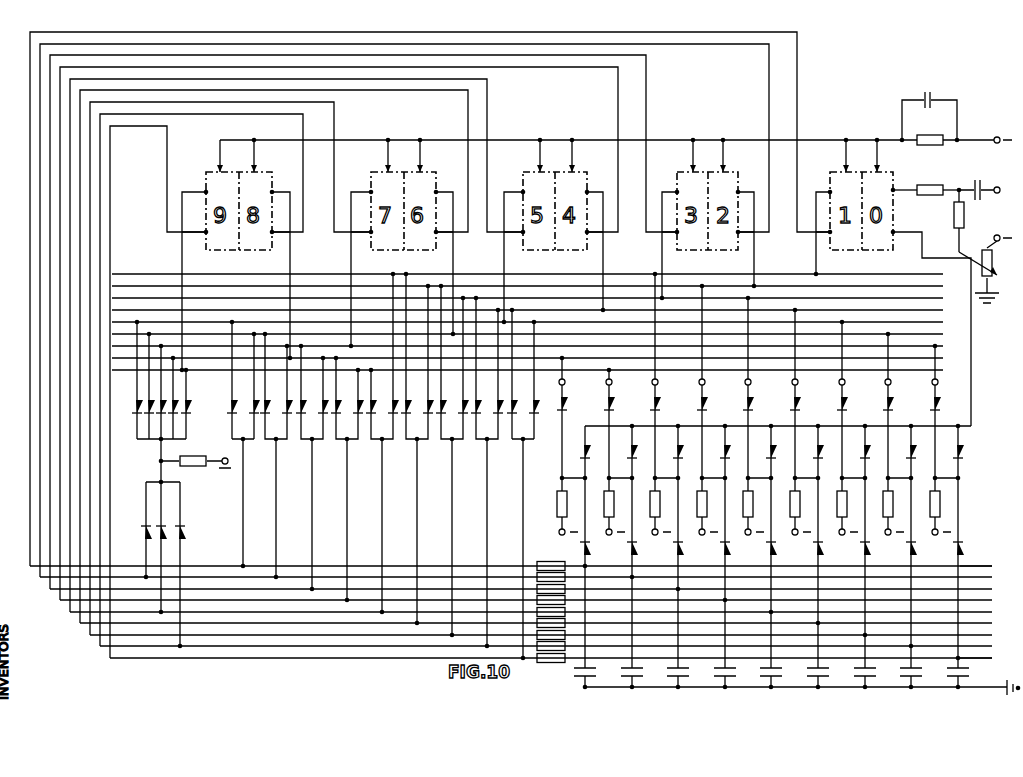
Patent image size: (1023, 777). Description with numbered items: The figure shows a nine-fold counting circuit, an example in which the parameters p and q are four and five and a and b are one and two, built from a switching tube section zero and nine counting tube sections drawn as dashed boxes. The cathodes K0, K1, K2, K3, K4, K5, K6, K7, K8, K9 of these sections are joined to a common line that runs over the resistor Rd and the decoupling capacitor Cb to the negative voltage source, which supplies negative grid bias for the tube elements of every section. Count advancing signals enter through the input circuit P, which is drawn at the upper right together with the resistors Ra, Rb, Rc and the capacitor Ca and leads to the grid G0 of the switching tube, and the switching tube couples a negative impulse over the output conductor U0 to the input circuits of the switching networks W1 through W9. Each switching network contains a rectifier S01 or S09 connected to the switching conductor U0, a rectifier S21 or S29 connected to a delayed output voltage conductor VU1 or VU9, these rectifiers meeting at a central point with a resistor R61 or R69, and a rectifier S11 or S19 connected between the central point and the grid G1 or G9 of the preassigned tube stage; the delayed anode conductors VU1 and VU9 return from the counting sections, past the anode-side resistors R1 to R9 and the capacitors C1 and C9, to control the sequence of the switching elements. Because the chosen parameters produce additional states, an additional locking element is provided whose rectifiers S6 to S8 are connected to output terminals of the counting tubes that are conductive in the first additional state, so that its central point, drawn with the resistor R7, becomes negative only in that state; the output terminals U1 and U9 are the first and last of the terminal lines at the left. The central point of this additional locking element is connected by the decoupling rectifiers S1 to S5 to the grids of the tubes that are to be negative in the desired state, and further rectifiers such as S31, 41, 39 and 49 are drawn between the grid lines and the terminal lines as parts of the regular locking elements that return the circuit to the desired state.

The cathode of switching tube section K0 is at (883, 155).
The cathode of counting tube K1 is at (852, 155).
The cathode of counting tube K2 is at (729, 155).
The cathode of counting tube K3 is at (699, 155).
The cathode of counting tube K4 is at (578, 155).
The cathode of counting tube K5 is at (546, 155).
The cathode of counting tube K6 is at (426, 155).
The cathode of counting tube K7 is at (394, 155).
The cathode of counting tube K8 is at (261, 155).
The cathode of counting tube K9 is at (226, 156).
The decoupling rectifier S1 is at (130, 379).
The decoupling rectifier S5 is at (193, 403).
The rectifier of additional locking element S6 is at (138, 530).
The rectifier of additional locking element S8 is at (187, 565).
The switch S31 is at (224, 379).
The switch 41 is at (256, 385).
The switch 39 is at (510, 373).
The switch 49 is at (538, 379).
The rectifier S11 is at (572, 431).
The rectifier S19 is at (946, 431).
The rectifier S01 is at (577, 452).
The rectifier S09 is at (971, 451).
The rectifier S21 is at (579, 522).
The rectifier S29 is at (971, 568).
The switching network W1 is at (572, 373).
The switching network W9 is at (925, 367).
The resistor R61 is at (561, 505).
The resistor R69 is at (940, 505).
The resistor R7 is at (196, 470).
The resistor R1 is at (551, 558).
The resistor R9 is at (551, 666).
The capacitor C1 is at (580, 627).
The capacitor C9 is at (966, 673).
The variable resistor Ra is at (994, 269).
The resistor Rb is at (968, 221).
The resistor Rc is at (938, 199).
The resistor Rd is at (930, 149).
The capacitor Ca is at (975, 181).
The decoupling capacitor Cb is at (930, 108).
The gate line G0 is at (904, 181).
The grid G1 is at (537, 273).
The grid G9 is at (537, 368).
The output conductor U0 is at (940, 329).
The output terminal U1 is at (500, 303).
The output terminal U9 is at (542, 399).
The delayed anode conductor VU1 is at (989, 567).
The delayed anode conductor VU9 is at (989, 660).
The input circuit P is at (1003, 192).